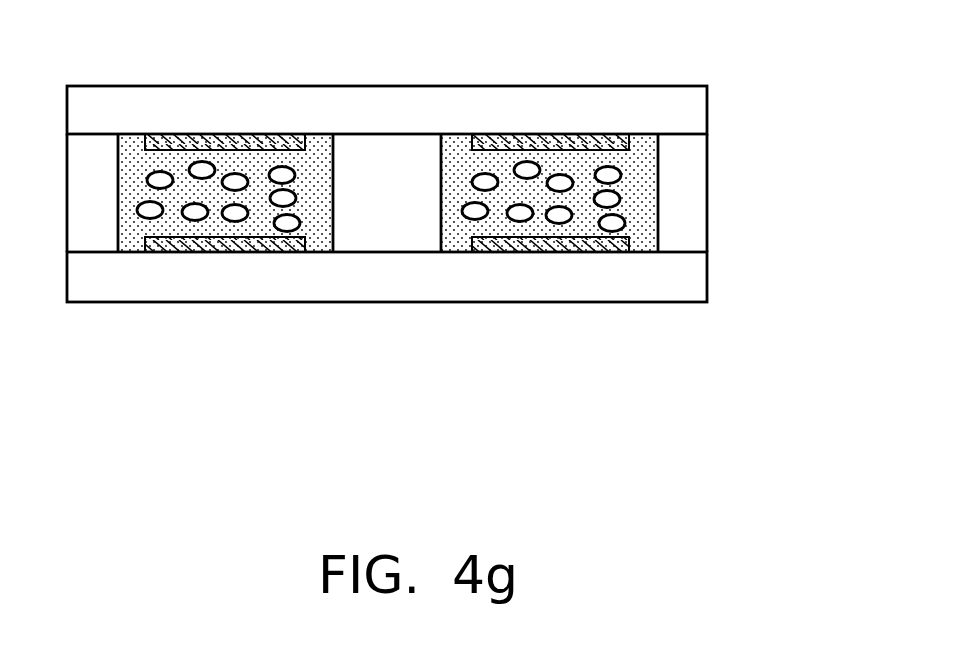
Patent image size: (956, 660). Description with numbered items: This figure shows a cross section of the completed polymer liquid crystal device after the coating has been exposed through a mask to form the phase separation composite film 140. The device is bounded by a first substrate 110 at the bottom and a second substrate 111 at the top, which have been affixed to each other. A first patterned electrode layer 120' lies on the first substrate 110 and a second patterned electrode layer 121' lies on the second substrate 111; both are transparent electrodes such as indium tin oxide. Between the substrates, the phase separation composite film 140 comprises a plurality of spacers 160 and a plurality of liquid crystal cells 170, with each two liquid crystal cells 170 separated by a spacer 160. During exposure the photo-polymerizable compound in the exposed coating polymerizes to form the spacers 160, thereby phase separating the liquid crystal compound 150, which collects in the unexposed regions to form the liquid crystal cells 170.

The second substrate 111 is at (698, 110).
The first substrate 110 is at (698, 278).
The phase separation composite film (PSCOF) 140 is at (474, 193).
The liquid crystal cell 170 is at (645, 166).
The spacer 160 is at (698, 222).
The second patterned electrode layer 121' is at (387, 81).
The first patterned electrode layer 120' is at (387, 308).
The liquid crystal compound 150 is at (476, 213).